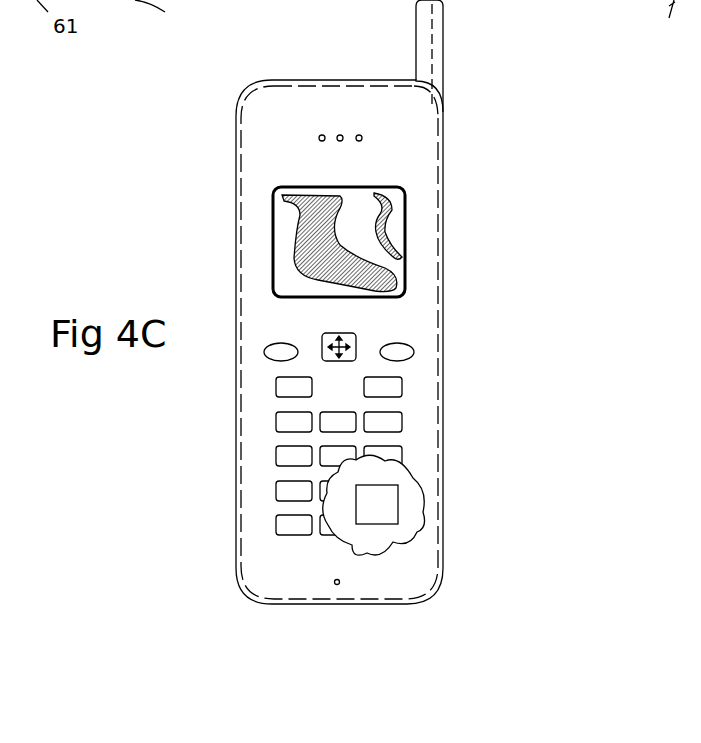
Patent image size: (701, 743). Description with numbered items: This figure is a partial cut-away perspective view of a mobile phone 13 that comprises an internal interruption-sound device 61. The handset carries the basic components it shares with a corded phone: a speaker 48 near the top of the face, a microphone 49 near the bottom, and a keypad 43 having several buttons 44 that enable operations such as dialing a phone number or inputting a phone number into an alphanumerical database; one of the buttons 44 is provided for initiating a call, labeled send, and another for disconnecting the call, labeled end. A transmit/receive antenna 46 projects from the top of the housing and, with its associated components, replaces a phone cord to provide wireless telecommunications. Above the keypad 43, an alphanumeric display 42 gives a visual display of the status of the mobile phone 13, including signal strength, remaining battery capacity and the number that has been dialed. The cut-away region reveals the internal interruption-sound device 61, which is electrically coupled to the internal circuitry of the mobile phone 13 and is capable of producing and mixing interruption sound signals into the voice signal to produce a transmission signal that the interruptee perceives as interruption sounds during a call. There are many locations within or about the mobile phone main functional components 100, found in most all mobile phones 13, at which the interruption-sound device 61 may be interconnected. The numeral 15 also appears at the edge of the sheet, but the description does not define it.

The mobile phone 13 is at (443, 538).
The mobile terminal 15 is at (184, 24).
The alphanumeric display 42 is at (393, 232).
The keypad 43 is at (413, 384).
The buttons 44 is at (402, 458).
The transmit/receive antenna 46 is at (444, 50).
The speaker 48 is at (341, 134).
The microphone 49 is at (337, 586).
The internal interruption-sound device 61 is at (398, 507).
The mobile phone main functional components 100 is at (420, 525).